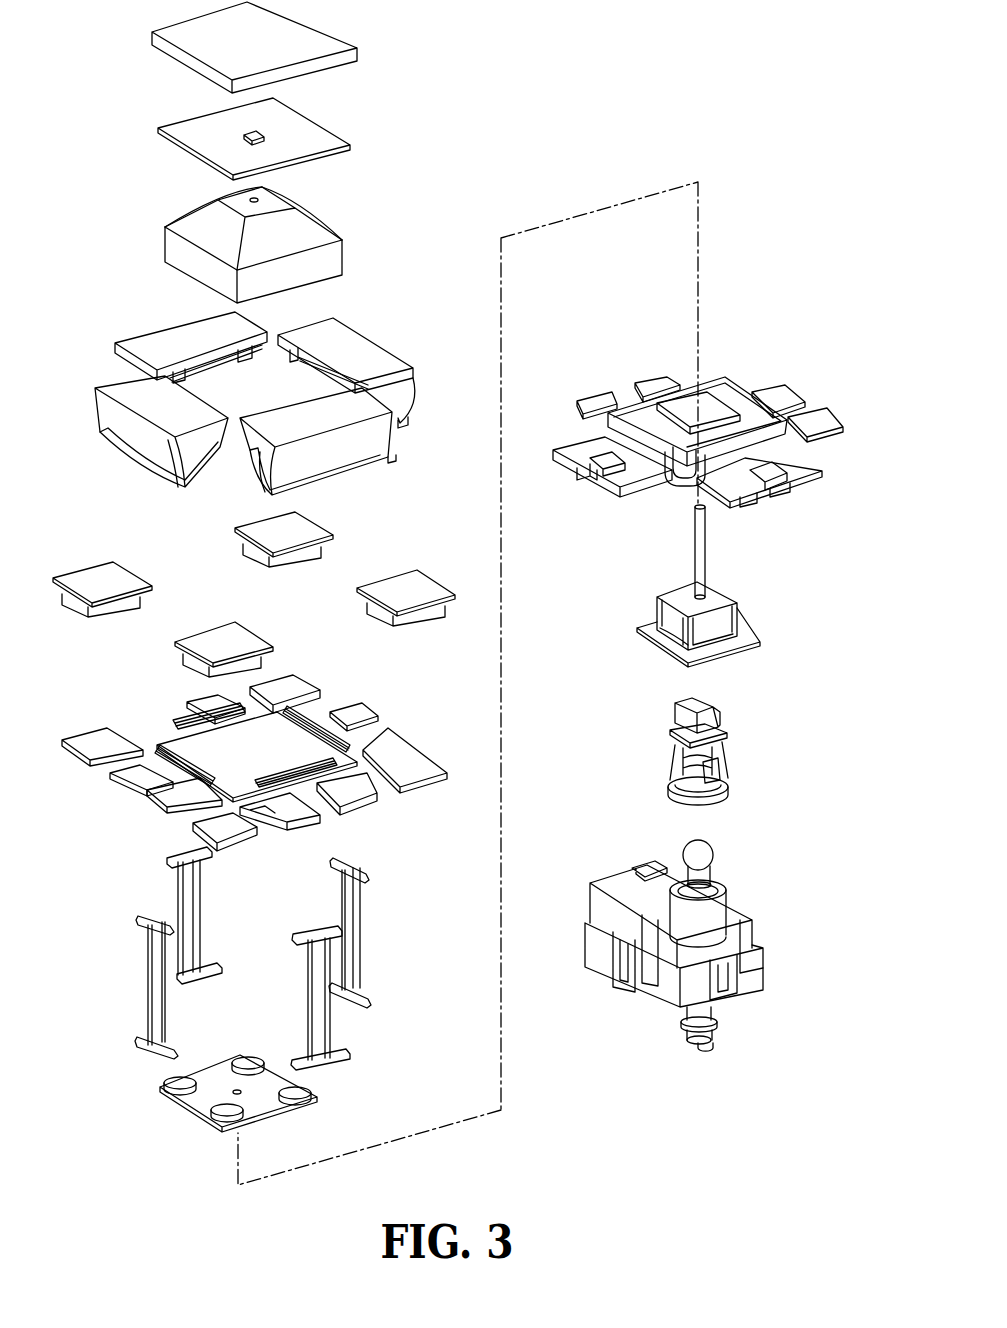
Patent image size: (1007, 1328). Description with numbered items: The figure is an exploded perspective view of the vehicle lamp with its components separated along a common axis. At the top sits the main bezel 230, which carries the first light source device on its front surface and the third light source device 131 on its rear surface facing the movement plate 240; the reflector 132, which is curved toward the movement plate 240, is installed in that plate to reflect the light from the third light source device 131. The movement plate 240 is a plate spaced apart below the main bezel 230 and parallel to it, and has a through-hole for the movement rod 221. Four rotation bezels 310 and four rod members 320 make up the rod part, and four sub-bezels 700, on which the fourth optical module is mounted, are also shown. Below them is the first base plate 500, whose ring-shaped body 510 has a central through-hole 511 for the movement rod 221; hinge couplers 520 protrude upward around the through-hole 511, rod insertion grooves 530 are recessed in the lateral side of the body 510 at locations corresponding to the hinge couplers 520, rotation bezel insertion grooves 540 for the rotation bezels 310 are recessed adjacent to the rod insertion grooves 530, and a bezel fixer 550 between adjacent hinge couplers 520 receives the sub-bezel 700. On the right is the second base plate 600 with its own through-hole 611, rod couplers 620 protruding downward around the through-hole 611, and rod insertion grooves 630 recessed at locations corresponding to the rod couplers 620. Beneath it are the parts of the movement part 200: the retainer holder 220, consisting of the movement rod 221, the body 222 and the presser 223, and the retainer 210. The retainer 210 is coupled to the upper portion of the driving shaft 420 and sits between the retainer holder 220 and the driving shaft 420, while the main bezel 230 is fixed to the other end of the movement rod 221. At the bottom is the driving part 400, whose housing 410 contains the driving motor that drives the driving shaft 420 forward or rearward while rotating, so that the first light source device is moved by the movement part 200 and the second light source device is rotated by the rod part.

The third light source device 131 is at (298, 120).
The reflector 132 is at (310, 230).
The movement part 200 is at (812, 1058).
The retainer 210 is at (720, 748).
The retainer holder 220 is at (745, 586).
The movement rod 221 is at (698, 535).
The body 222 is at (710, 597).
The presser 223 is at (717, 628).
The main bezel 230 is at (320, 33).
The movement plate 240 is at (183, 1103).
The rotation bezel 310 is at (120, 390).
The rod member 320 is at (150, 980).
The driving part 400 is at (738, 937).
The housing 410 is at (720, 950).
The driving shaft 420 is at (703, 873).
The first base plate 500 is at (232, 728).
The body 510 is at (260, 753).
The through-hole 511 is at (343, 708).
The hinge coupler 520 is at (340, 714).
The rod insertion groove 530 is at (143, 790).
The rotation bezel insertion groove 540 is at (267, 823).
The bezel fixer 550 is at (412, 765).
The second base plate 600 is at (703, 431).
The through-hole 611 is at (757, 410).
The rod coupler 620 is at (610, 495).
The rod insertion groove 630 is at (773, 495).
The sub-bezel 700 is at (262, 523).